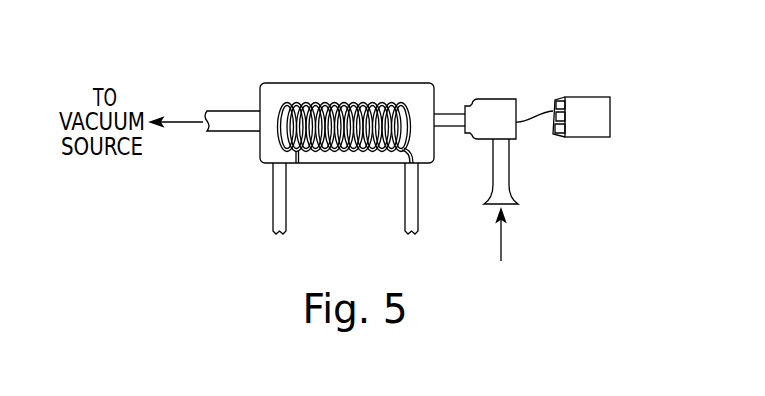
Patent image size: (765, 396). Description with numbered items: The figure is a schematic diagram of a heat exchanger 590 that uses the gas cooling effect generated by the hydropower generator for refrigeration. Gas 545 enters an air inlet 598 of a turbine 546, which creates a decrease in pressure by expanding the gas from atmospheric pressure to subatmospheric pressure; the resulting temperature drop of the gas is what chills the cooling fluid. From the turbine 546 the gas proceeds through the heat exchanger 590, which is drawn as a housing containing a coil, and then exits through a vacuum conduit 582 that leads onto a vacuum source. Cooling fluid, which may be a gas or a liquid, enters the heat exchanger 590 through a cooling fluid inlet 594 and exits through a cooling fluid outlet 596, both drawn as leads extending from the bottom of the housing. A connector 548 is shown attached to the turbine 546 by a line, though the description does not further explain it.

The gas 545 is at (190, 124).
The vacuum conduit 582 is at (220, 111).
The heat exchanger 590 is at (388, 83).
The cooling fluid inlet 594 is at (286, 205).
The cooling fluid outlet 596 is at (418, 220).
The turbine 546 is at (490, 99).
The electrical plug 548 is at (590, 97).
The air inlet 598 is at (509, 160).